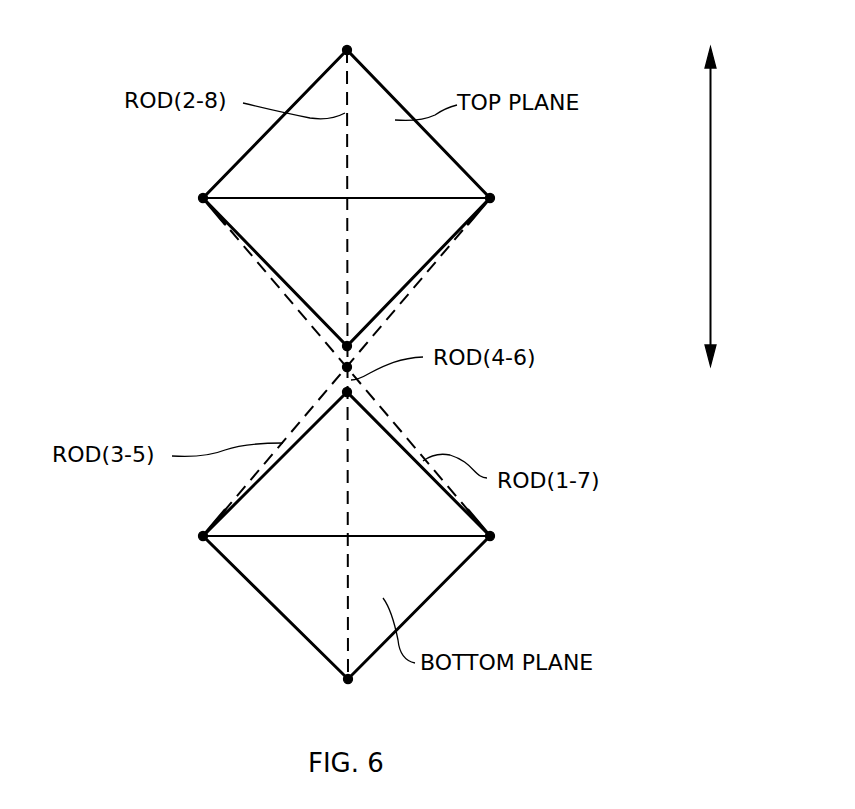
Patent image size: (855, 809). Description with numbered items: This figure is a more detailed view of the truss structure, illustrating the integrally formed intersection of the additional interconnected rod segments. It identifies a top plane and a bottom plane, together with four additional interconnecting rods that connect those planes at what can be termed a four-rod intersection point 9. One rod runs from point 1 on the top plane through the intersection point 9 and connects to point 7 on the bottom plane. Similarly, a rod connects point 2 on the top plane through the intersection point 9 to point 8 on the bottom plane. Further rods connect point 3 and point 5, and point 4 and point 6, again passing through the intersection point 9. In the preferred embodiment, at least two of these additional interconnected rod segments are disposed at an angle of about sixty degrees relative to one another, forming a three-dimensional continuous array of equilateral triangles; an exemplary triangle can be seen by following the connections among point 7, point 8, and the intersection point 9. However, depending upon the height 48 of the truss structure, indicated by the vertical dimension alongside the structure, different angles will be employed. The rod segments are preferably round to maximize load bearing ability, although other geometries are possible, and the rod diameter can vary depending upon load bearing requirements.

The top plane point 1 is at (202, 199).
The top plane point 2 is at (348, 50).
The top plane point 3 is at (490, 198).
The top plane point 4 is at (346, 347).
The bottom plane point 5 is at (203, 536).
The bottom plane point 6 is at (348, 392).
The bottom plane point 7 is at (490, 536).
The bottom plane point 8 is at (349, 680).
The four-rod intersection point 9 is at (348, 367).
The height of the truss structure 48 is at (711, 200).